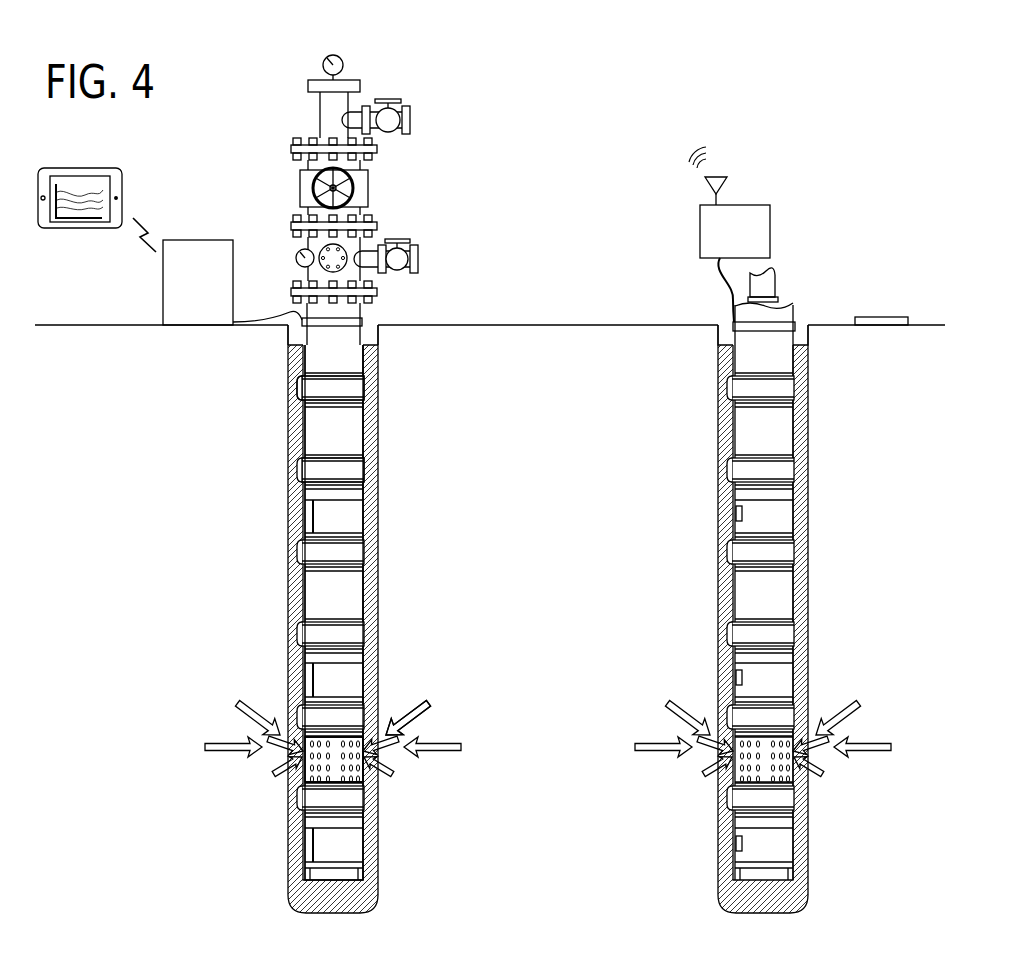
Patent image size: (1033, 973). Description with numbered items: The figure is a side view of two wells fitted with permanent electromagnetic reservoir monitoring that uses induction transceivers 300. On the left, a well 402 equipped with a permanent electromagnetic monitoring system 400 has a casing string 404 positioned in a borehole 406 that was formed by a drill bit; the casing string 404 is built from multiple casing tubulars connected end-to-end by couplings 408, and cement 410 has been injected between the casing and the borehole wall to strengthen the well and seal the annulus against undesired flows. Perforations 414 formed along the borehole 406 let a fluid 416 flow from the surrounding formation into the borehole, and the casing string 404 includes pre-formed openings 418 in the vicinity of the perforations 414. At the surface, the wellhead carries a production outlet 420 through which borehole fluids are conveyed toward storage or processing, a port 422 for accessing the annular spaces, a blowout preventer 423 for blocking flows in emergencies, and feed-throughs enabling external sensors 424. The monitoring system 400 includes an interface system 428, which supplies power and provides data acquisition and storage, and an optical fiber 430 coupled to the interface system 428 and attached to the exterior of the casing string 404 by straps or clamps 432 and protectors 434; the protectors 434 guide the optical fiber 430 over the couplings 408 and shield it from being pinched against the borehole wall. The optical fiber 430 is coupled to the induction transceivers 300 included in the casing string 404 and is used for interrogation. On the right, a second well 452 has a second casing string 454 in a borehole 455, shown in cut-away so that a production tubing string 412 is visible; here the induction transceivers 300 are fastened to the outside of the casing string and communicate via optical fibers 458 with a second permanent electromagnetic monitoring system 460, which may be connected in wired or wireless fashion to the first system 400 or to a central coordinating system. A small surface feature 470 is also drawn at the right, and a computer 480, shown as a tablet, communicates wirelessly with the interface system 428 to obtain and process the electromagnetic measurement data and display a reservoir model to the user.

The induction transceiver 300 is at (302, 660).
The permanent electromagnetic monitoring system 400 is at (158, 503).
The well 402 is at (408, 31).
The casing string 404 is at (380, 362).
The borehole 406 is at (287, 330).
The coupling 408 is at (360, 470).
The cement 410 is at (290, 432).
The production tubing string 412 is at (773, 280).
The perforations 414 is at (373, 755).
The fluid 416 is at (423, 719).
The pre-formed openings 418 is at (364, 780).
The production outlet 420 is at (391, 99).
The port 422 is at (396, 241).
The blowout preventer 423 is at (368, 193).
The external sensor 424 is at (323, 58).
The interface system 428 is at (165, 288).
The optical fiber 430 is at (297, 315).
The straps or clamps 432 is at (363, 322).
The protector 434 is at (297, 392).
The second well 452 is at (795, 148).
The second casing string 454 is at (795, 357).
The borehole 455 is at (717, 332).
The optical fiber 458 is at (716, 292).
The second permanent electromagnetic monitoring system 460 is at (655, 480).
The surface marker 470 is at (880, 327).
The computer 480 is at (70, 232).